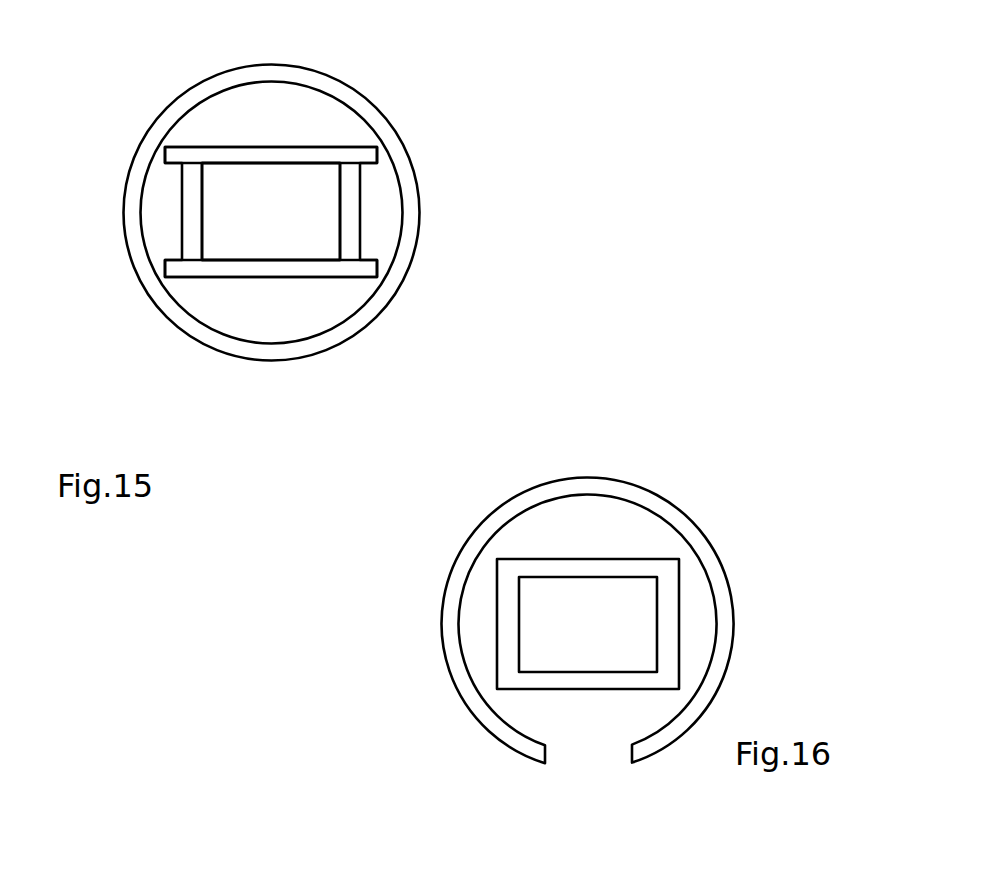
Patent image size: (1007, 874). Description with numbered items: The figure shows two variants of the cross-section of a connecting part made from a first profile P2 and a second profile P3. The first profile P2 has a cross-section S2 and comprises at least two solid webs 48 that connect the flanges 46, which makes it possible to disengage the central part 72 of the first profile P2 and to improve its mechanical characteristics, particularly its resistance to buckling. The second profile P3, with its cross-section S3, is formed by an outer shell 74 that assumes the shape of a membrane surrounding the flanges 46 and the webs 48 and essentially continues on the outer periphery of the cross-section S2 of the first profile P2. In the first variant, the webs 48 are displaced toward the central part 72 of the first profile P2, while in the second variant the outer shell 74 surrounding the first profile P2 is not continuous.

In FIG. 15, the outer shell 74 is at (350, 323).
In FIG. 16, the outer shell 74 is at (652, 504).
In FIG. 15, the solid webs 48 is at (348, 205).
In FIG. 16, the solid webs 48 is at (507, 613).
In FIG. 15, the central part 72 is at (256, 227).
In FIG. 15, the cross-section of the first profile S2 is at (233, 155).
In FIG. 16, the cross-section of the first profile S2 is at (582, 678).
In FIG. 15, the cross-section of the second profile S3 is at (401, 260).
In FIG. 16, the cross-section of the second profile S3 is at (717, 682).
In FIG. 15, the first profile P2 is at (208, 288).
In FIG. 16, the first profile P2 is at (570, 552).
In FIG. 15, the second profile P3 is at (391, 105).
In FIG. 16, the second profile P3 is at (720, 534).
In FIG. 16, the flanges 46 is at (165, 873).